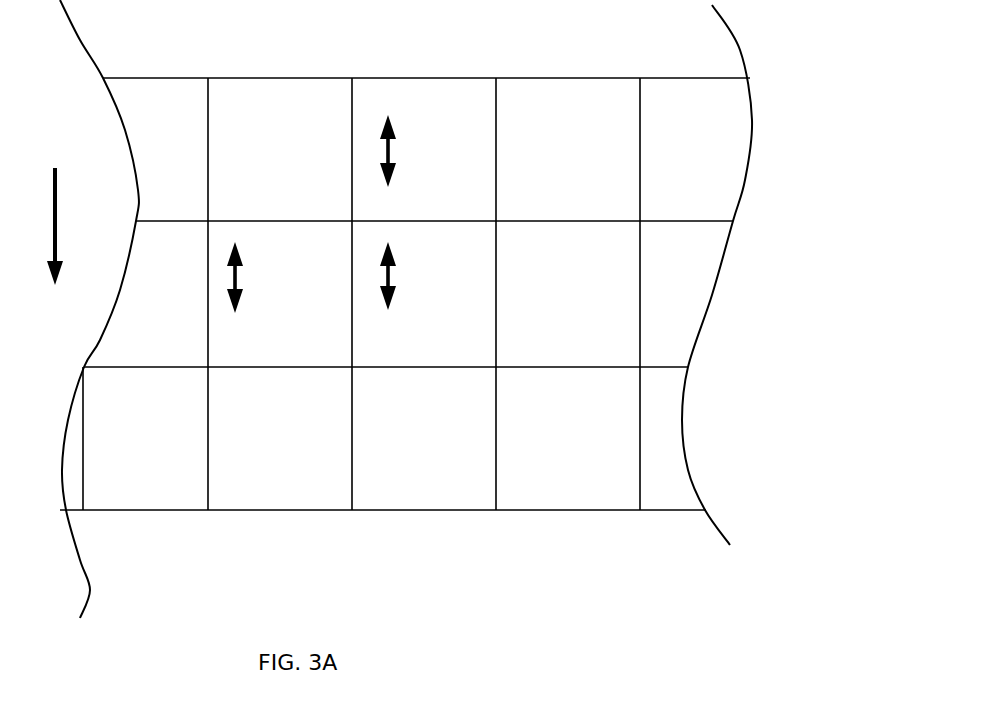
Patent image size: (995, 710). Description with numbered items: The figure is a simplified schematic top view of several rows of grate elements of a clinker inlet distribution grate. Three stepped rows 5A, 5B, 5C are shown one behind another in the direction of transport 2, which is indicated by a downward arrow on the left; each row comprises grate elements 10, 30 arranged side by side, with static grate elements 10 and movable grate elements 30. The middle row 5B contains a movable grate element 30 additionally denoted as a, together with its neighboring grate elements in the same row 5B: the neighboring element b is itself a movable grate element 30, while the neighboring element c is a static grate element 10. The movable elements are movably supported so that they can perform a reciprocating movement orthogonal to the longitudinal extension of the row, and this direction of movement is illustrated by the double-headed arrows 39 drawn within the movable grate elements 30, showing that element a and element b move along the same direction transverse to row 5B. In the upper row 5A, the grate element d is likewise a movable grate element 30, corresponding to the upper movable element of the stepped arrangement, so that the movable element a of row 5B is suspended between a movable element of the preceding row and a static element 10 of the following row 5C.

The static grate element 10 is at (424, 294).
The movable grate element 30 is at (352, 222).
The gap / spacing 39 is at (395, 130).
The direction of transport 2 is at (45, 226).
The upper row 5A is at (765, 151).
The middle row 5B is at (765, 295).
The lower row 5C is at (765, 438).
The movable grate element a is at (447, 357).
The neighboring movable grate element b is at (227, 339).
The static grate element c is at (622, 340).
The movable grate element d is at (365, 95).